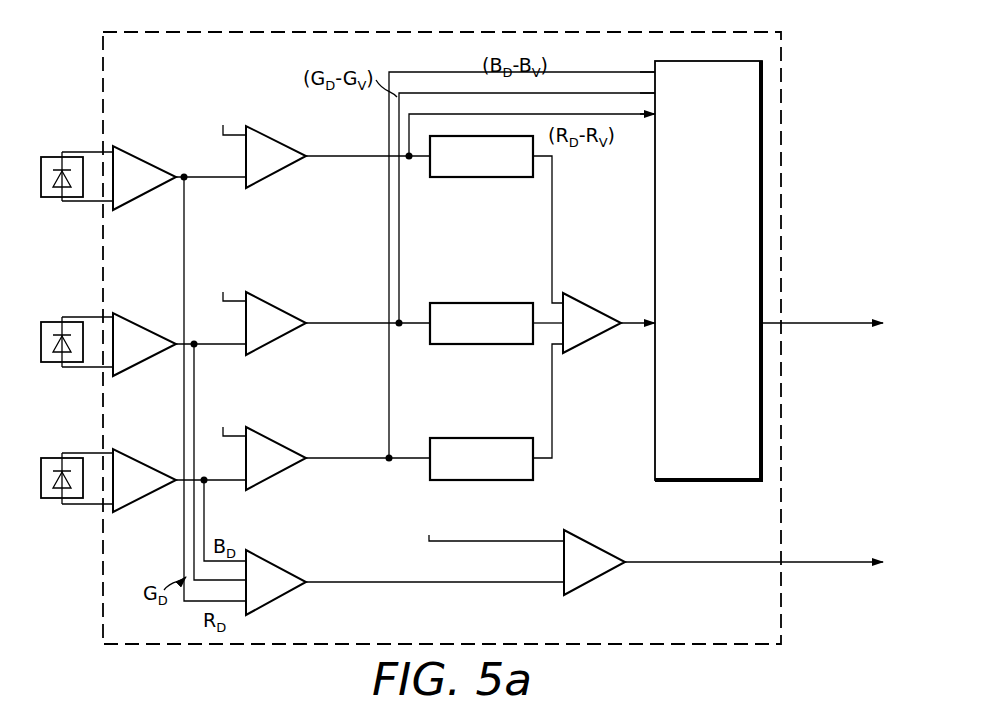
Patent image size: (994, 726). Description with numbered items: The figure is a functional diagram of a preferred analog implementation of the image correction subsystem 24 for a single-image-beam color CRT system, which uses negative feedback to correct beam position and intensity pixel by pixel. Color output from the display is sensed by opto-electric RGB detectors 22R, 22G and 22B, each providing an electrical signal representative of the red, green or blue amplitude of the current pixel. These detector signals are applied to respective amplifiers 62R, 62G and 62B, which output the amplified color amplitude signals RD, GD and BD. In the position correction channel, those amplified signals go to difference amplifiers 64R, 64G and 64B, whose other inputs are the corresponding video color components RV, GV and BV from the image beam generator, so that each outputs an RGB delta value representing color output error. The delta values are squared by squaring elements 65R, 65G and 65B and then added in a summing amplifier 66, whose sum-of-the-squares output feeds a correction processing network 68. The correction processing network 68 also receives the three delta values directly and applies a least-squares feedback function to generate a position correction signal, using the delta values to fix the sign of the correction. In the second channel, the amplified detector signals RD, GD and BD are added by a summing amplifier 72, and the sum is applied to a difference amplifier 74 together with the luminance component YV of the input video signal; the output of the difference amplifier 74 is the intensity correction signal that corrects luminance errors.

The image correction subsystem 24 is at (786, 90).
The red opto-electric detector 22R is at (48, 157).
The green opto-electric detector 22G is at (48, 322).
The blue opto-electric detector 22B is at (48, 458).
The red amplifier 62R is at (124, 155).
The green amplifier 62G is at (124, 322).
The blue amplifier 62B is at (124, 458).
The red difference amplifier 64R is at (262, 134).
The green difference amplifier 64G is at (262, 301).
The blue difference amplifier 64B is at (262, 436).
The red squaring element 65R is at (480, 178).
The green squaring element 65G is at (458, 303).
The blue squaring element 65B is at (458, 438).
The summing amplifier 66 is at (584, 303).
The correction processing network 68 is at (655, 166).
The summing amplifier 72 is at (262, 559).
The difference amplifier 74 is at (596, 547).